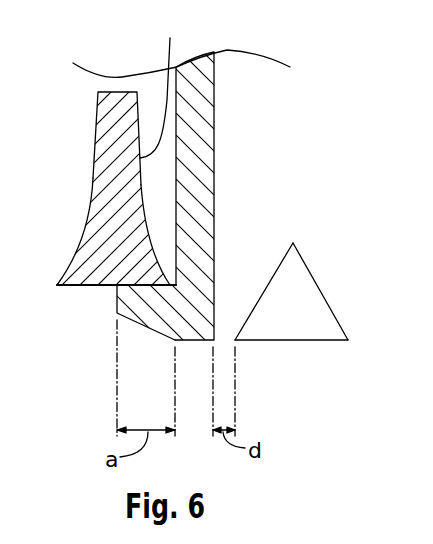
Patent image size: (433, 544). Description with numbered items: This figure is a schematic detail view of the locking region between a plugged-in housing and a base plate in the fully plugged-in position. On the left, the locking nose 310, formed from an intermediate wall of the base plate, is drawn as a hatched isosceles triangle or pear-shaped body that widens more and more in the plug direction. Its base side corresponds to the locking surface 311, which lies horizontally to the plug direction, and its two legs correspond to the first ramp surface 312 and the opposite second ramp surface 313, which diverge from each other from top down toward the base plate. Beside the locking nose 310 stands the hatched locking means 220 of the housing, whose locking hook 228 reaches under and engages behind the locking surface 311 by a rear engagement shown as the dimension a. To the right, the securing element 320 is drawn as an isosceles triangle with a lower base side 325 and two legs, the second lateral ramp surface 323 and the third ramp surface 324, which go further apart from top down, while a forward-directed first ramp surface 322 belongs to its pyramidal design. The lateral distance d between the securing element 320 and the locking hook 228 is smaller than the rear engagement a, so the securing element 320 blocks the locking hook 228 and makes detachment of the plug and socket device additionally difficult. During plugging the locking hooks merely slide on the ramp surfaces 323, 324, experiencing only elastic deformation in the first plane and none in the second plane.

The locking means 220 is at (205, 123).
The locking hook 228 is at (162, 309).
The locking nose 310 is at (90, 255).
The locking surface 311 is at (98, 288).
The first ramp surface 312 is at (167, 85).
The second ramp surface 313 is at (93, 172).
The securing element 320 is at (326, 316).
The first ramp surface 322 is at (303, 325).
The second lateral ramp surface 323 is at (267, 285).
The third ramp surface 324 is at (342, 325).
The lower base side 325 is at (333, 343).